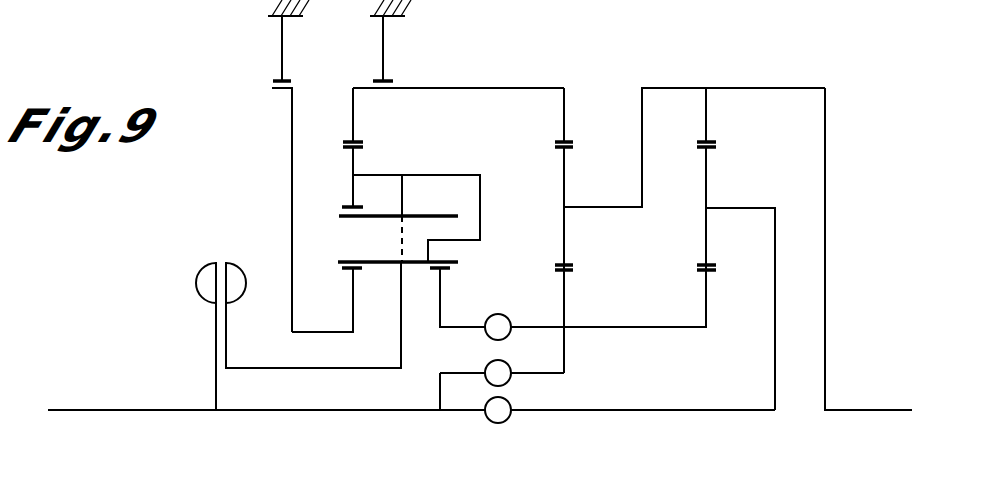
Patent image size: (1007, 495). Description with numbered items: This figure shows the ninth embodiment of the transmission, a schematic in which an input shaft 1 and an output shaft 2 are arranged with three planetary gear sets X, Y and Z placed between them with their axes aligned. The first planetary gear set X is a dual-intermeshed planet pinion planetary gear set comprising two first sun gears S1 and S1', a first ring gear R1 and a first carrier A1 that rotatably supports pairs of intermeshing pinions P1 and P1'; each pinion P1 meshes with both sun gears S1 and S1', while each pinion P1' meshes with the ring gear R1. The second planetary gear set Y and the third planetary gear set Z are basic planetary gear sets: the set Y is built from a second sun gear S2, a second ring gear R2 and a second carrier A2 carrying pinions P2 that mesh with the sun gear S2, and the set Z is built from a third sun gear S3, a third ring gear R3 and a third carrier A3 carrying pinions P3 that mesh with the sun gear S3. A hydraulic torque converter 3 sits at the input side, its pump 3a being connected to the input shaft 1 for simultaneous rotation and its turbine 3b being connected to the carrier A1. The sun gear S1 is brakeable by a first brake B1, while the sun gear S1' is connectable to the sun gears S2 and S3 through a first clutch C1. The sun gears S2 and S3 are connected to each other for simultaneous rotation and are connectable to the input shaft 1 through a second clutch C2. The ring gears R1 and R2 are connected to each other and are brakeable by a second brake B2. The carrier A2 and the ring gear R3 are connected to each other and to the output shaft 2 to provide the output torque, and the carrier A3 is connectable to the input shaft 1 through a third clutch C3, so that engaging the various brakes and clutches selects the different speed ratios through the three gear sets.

The input shaft 1 is at (75, 411).
The output shaft 2 is at (853, 411).
The hydraulic torque converter 3 is at (262, 301).
The pump 3a is at (200, 294).
The turbine 3b is at (238, 302).
The first brake B1 is at (280, 80).
The second brake B2 is at (388, 80).
The first ring gear R1 is at (355, 118).
The pinion P1' is at (398, 176).
The pinion P1 is at (422, 260).
The first carrier A1 is at (481, 203).
The first sun gear S1 is at (345, 306).
The first sun gear S1' is at (467, 297).
The first clutch C1 is at (507, 316).
The second clutch C2 is at (509, 381).
The third clutch C3 is at (509, 418).
The second ring gear R2 is at (566, 117).
The pinion P2 is at (565, 183).
The second carrier A2 is at (606, 208).
The second sun gear S2 is at (566, 302).
The third ring gear R3 is at (708, 118).
The pinion P3 is at (708, 240).
The third carrier A3 is at (752, 208).
The third sun gear S3 is at (708, 313).
The first planetary gear set X is at (424, 338).
The second planetary gear set Y is at (578, 100).
The third planetary gear set Z is at (724, 326).